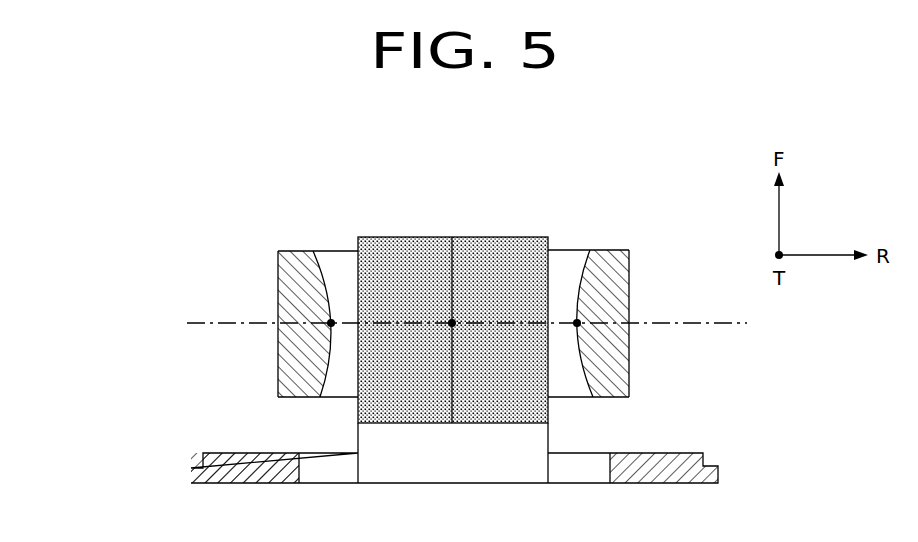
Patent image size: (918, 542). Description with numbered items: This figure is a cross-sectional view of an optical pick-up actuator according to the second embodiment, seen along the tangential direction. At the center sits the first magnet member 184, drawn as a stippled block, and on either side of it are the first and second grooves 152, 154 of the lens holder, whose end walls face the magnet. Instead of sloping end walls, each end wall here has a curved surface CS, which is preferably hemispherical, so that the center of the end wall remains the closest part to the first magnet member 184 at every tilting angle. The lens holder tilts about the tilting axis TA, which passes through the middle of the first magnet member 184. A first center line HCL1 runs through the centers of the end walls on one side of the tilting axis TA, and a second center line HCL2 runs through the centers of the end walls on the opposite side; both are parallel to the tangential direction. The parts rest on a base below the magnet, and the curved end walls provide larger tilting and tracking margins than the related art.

The first groove 152 is at (343, 254).
The second groove 154 is at (570, 261).
The first magnet member 184 is at (406, 244).
The tilting axis TA is at (452, 321).
The first center line HCL1 is at (331, 323).
The second center line HCL2 is at (577, 323).
The curved surface CS is at (323, 380).
The base plate base is at (454, 453).